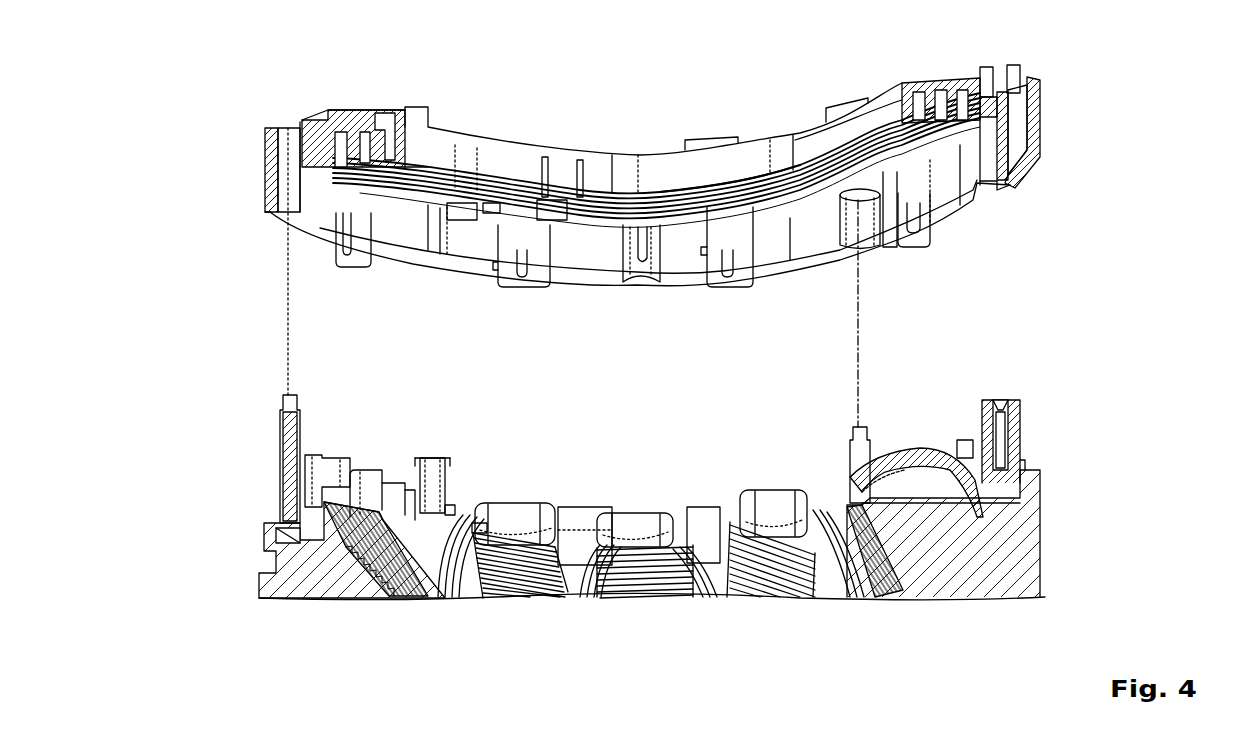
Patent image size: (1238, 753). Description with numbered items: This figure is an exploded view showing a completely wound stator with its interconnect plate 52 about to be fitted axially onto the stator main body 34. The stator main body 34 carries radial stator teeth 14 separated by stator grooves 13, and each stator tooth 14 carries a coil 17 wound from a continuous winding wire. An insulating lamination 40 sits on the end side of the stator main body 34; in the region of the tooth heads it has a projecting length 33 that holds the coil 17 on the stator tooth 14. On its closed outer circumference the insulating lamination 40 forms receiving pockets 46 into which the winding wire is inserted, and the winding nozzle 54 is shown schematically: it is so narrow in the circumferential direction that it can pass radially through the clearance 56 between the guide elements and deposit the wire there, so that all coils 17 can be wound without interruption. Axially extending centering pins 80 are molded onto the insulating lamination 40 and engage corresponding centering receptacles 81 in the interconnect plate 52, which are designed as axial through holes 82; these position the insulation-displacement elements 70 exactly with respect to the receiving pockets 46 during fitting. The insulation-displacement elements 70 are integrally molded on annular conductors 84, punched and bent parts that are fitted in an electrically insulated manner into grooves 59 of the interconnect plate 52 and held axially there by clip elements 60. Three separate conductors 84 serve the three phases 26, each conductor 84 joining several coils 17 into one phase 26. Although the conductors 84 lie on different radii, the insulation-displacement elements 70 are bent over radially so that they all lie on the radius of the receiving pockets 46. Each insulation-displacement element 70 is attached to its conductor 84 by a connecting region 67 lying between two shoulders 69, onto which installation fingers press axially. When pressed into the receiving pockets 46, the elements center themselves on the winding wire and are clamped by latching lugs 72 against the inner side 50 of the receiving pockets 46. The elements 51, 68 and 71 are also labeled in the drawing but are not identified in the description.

The stator grooves 13 is at (565, 570).
The stator teeth 14 is at (648, 585).
The coil 17 is at (410, 580).
The phases 26 is at (365, 98).
The conductors 84 is at (380, 125).
The projecting length 33 is at (640, 525).
The stator main body 34 is at (1025, 550).
The insulating lamination 40 is at (694, 492).
The receiving pockets 46 is at (358, 490).
The inner side 50 is at (1025, 418).
The guide slot 51 is at (1000, 400).
The interconnect plate 52 is at (667, 218).
The winding nozzle 54 is at (430, 470).
The clearance 56 is at (447, 500).
The grooves 59 is at (943, 105).
The clip elements 60 is at (456, 203).
The connecting region 67 is at (704, 222).
The hatched wall 68 is at (933, 108).
The shoulders 69 is at (510, 196).
The insulation-displacement elements 70 is at (362, 230).
The snap hook 71 is at (725, 270).
The latching lugs 72 is at (753, 243).
The centering pins 80 is at (306, 400).
The centering receptacles 81 is at (237, 167).
The axial through holes 82 is at (282, 170).